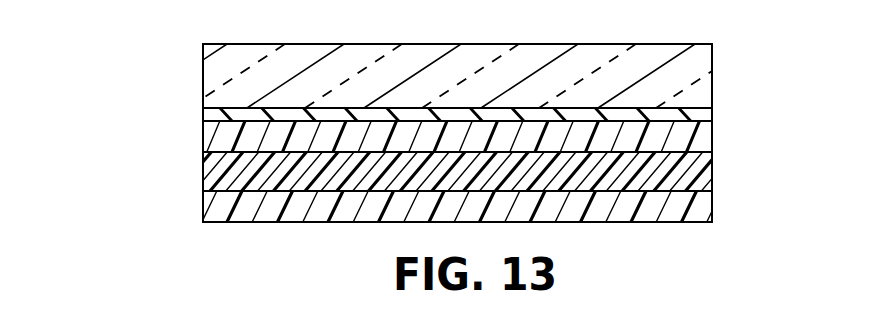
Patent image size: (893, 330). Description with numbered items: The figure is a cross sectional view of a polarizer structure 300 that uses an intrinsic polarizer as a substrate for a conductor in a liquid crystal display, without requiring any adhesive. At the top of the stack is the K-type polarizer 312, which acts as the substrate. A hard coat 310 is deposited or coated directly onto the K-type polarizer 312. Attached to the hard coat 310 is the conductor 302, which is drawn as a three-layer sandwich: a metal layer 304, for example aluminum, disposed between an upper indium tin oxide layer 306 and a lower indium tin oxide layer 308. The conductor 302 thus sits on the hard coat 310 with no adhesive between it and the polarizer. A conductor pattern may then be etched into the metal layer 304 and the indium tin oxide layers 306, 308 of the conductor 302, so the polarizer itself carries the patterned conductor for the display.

The polarizer structure 300 is at (134, 79).
The conductor 302 is at (203, 122).
The metal layer 304 is at (703, 170).
The indium tin oxide layer 306 is at (703, 137).
The indium tin oxide layer 308 is at (703, 207).
The hard coat 310 is at (703, 112).
The K-type polarizer 312 is at (703, 77).